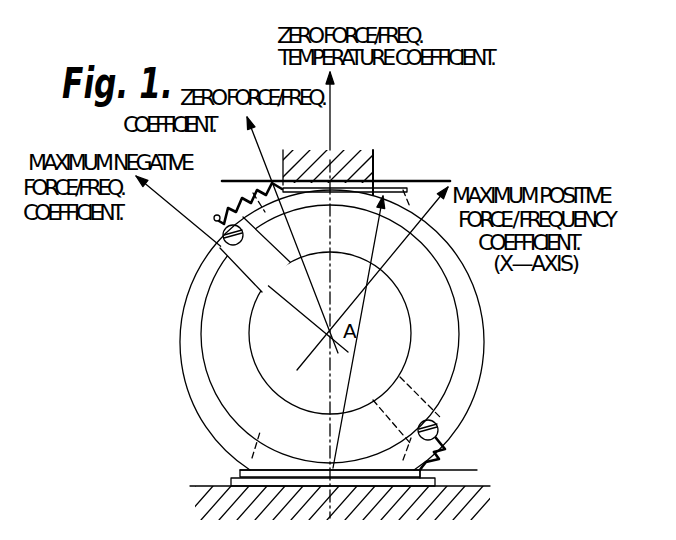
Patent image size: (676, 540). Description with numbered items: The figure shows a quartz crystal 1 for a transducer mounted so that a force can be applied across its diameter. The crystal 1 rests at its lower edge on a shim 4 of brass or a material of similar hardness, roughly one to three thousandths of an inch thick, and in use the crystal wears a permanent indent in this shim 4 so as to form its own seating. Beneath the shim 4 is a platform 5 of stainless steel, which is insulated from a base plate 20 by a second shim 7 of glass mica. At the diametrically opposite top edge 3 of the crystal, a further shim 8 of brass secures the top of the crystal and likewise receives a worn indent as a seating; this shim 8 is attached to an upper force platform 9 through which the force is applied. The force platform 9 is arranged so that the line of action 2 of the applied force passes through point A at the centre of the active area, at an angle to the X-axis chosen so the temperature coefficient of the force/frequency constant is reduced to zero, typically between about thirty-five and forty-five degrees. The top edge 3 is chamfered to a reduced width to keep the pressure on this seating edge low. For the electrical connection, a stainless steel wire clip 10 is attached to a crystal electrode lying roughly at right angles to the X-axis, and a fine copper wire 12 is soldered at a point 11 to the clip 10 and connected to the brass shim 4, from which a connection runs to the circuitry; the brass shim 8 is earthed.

The crystal 1 is at (215, 317).
The line of action 2 is at (327, 156).
The top edge 3 is at (372, 203).
The shim 4 is at (242, 470).
The platform 5 is at (240, 475).
The second shim 7 is at (233, 485).
The further shim 8 is at (388, 190).
The upper force platform 9 is at (381, 152).
The wire clip 10 is at (436, 418).
The solder point 11 is at (462, 438).
The fine copper wire 12 is at (470, 456).
The base plate 20 is at (290, 509).